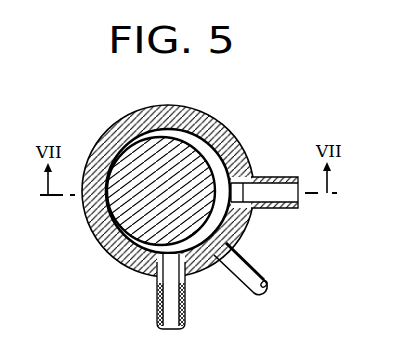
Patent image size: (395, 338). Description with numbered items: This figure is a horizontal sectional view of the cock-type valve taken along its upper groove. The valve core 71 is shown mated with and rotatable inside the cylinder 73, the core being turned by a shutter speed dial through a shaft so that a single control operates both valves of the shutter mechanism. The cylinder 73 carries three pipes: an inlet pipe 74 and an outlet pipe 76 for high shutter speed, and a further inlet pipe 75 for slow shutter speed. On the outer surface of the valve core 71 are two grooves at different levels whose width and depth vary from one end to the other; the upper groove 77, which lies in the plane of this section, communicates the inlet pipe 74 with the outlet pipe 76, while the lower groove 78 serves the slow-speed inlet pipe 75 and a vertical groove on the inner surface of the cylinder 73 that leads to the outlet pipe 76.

The valve core 71 is at (129, 145).
The cylinder 73 is at (172, 110).
The inlet pipe 74 is at (187, 302).
The inlet pipe 75 is at (245, 254).
The outlet pipe 76 is at (283, 177).
The upper groove 77 is at (213, 152).
The lower groove 78 is at (104, 226).